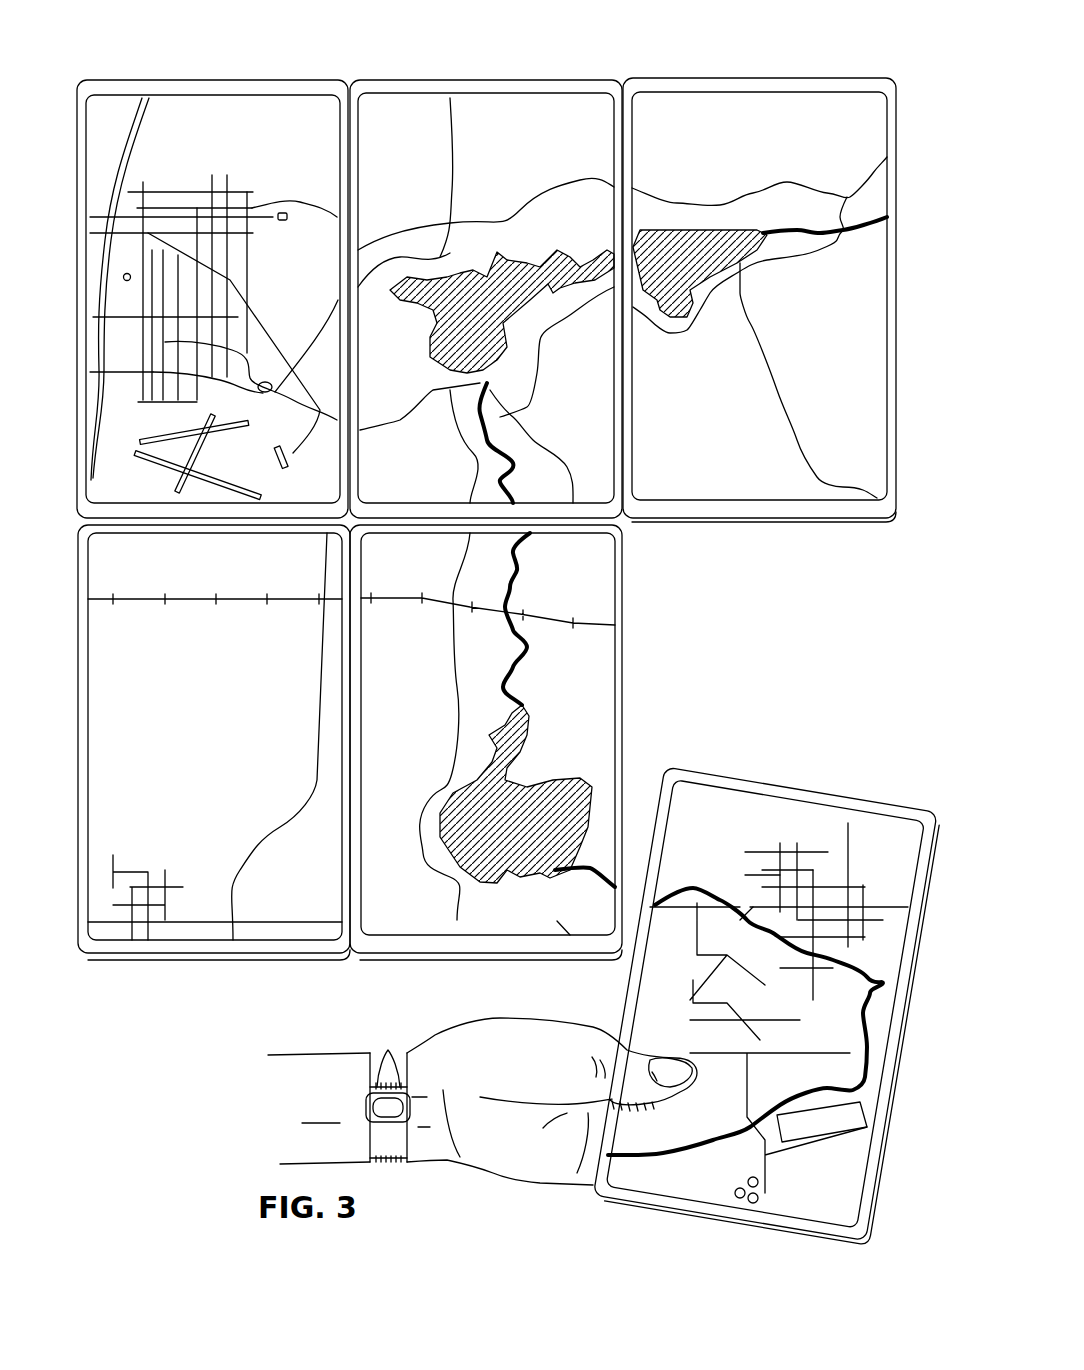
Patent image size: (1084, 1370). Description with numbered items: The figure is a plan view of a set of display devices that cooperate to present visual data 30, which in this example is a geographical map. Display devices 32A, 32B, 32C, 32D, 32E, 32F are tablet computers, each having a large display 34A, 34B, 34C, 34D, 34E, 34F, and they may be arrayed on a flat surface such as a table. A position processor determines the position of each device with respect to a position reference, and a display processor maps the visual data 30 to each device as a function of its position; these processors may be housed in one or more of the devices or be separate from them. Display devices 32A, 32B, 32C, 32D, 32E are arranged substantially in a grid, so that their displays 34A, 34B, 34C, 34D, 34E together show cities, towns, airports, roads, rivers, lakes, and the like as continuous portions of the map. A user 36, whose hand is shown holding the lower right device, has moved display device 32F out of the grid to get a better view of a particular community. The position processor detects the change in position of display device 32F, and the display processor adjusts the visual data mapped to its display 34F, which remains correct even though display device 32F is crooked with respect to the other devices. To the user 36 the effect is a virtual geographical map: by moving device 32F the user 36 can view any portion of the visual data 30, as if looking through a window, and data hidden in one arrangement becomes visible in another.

The visual data 30 is at (128, 1100).
The display device 32A is at (152, 80).
The display device 32B is at (434, 80).
The display device 32C is at (690, 78).
The display device 32D is at (150, 960).
The display device 32E is at (428, 960).
The display device 32F is at (745, 777).
The display 34A is at (260, 100).
The display 34B is at (525, 98).
The display 34C is at (814, 100).
The display 34D is at (287, 928).
The display 34E is at (509, 933).
The display 34F is at (864, 815).
The user 36 is at (507, 1174).